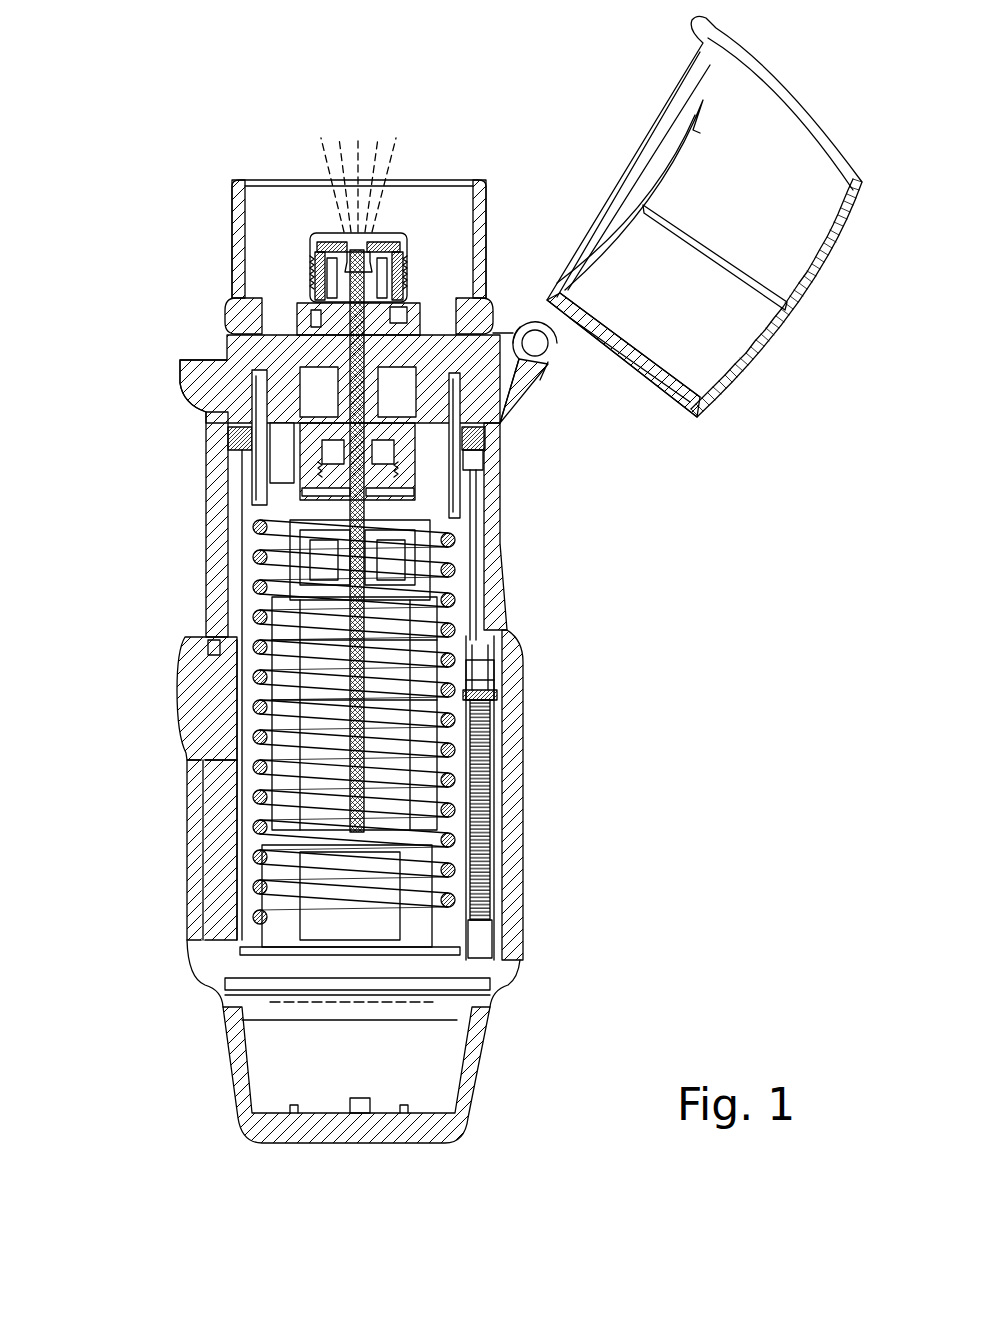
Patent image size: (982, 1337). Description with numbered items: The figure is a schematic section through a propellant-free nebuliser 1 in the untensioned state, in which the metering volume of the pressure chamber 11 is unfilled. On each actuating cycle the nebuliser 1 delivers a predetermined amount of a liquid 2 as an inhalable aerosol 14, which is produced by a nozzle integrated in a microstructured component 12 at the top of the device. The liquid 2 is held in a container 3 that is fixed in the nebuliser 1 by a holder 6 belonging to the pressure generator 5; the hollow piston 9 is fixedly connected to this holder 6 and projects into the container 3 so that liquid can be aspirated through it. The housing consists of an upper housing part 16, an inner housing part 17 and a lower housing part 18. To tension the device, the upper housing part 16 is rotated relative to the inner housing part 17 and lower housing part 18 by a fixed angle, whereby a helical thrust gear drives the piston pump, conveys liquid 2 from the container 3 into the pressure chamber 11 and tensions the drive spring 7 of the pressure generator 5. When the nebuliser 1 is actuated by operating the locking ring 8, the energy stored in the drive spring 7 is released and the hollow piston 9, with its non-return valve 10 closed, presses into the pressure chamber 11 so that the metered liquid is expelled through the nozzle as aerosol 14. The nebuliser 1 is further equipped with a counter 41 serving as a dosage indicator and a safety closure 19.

The nebuliser 1 is at (404, 133).
The liquid 2 is at (490, 702).
The container 3 is at (488, 803).
The counter 41 is at (492, 838).
The pressure generator 5 is at (182, 368).
The holder 6 is at (405, 503).
The drive spring 7 is at (245, 905).
The locking ring 8 is at (226, 440).
The hollow piston 9 is at (253, 398).
The non-return valve 10 is at (290, 327).
The pressure chamber 11 is at (320, 303).
The microstructured component 12 is at (330, 245).
The aerosol 14 is at (338, 181).
The upper housing part 16 is at (222, 484).
The inner housing part 17 is at (225, 540).
The lower housing part 18 is at (212, 822).
The safety closure 19 is at (200, 705).